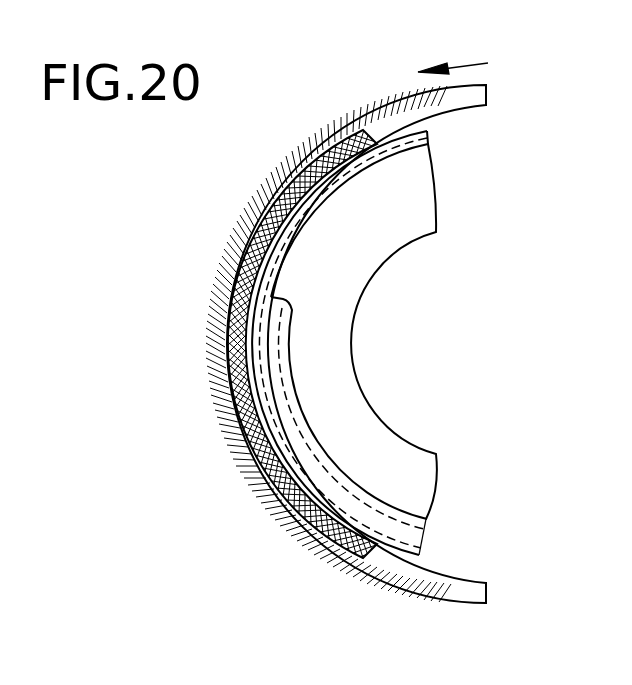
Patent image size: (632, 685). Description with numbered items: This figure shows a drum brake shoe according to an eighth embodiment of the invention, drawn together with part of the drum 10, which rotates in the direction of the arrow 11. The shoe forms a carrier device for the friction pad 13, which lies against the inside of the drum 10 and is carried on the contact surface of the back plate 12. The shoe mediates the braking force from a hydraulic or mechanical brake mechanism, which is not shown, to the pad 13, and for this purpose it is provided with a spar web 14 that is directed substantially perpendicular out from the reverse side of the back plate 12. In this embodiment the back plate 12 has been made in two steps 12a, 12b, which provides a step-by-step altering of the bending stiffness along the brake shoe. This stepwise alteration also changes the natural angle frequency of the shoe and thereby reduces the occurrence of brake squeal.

The drum 10 is at (460, 593).
The arrow 11 is at (472, 62).
The back plate 12 is at (374, 538).
The step 12a is at (287, 350).
The step 12b is at (363, 160).
The pad 13 is at (247, 471).
The spar web 14 is at (385, 425).